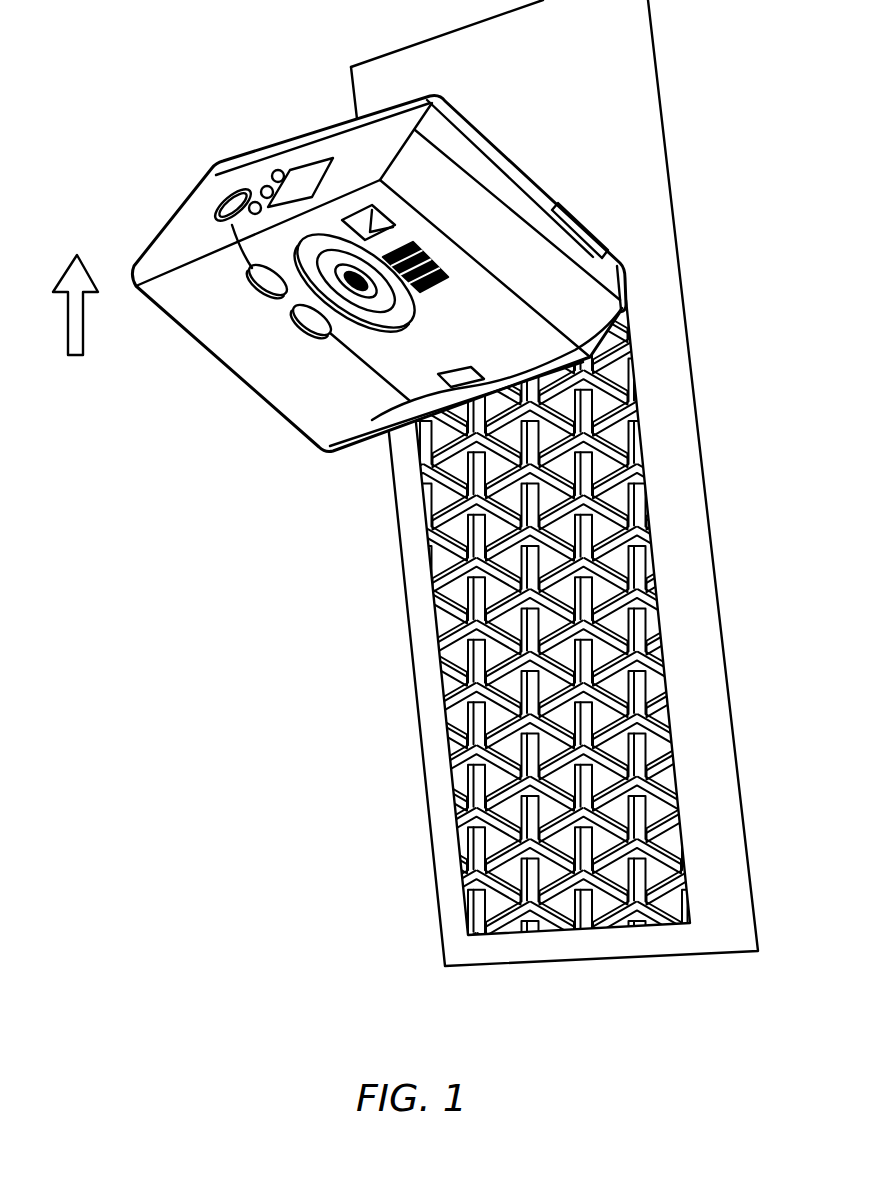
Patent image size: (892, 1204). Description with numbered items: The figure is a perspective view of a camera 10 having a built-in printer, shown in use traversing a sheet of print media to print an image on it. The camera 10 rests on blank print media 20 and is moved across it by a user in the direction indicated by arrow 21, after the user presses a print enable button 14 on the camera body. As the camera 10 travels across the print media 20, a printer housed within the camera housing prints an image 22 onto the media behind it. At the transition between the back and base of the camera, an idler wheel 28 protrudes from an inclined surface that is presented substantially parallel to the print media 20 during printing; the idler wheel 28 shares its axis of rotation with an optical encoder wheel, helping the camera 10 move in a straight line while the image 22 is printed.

The camera 10 is at (232, 131).
The print enable button 14 is at (437, 387).
The print media 20 is at (634, 106).
The arrow 21 is at (75, 328).
The image 22 is at (643, 488).
The idler wheel 28 is at (640, 271).